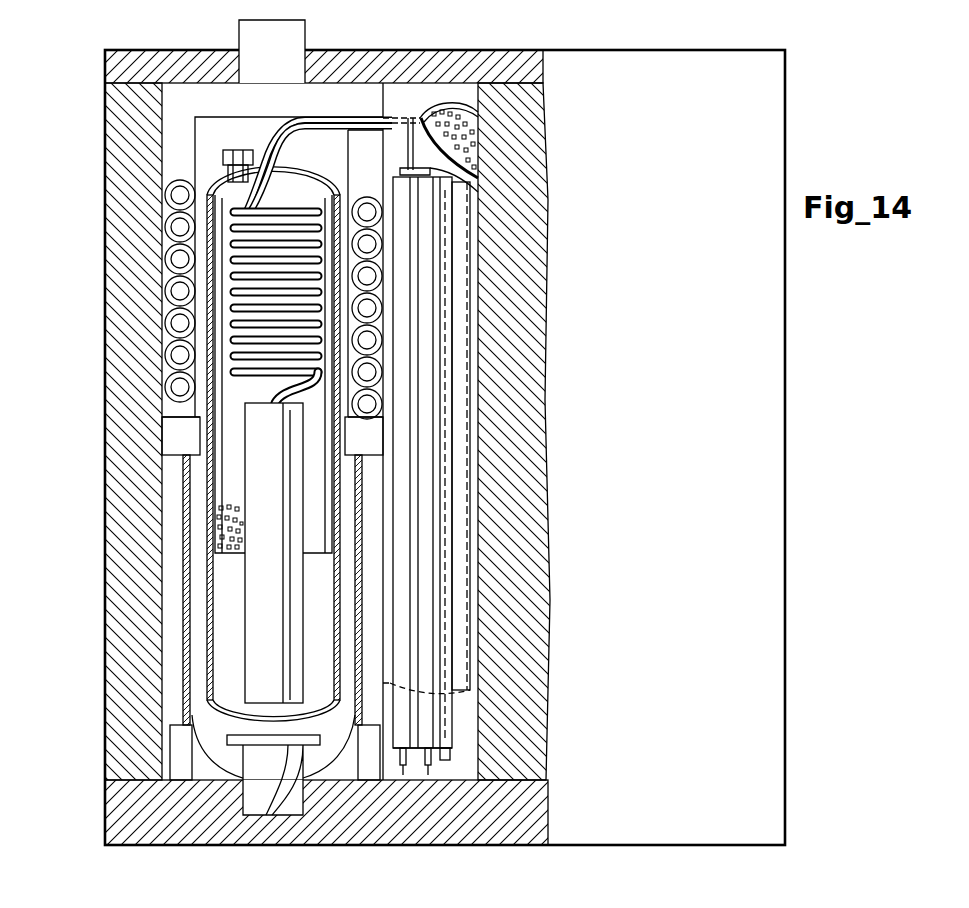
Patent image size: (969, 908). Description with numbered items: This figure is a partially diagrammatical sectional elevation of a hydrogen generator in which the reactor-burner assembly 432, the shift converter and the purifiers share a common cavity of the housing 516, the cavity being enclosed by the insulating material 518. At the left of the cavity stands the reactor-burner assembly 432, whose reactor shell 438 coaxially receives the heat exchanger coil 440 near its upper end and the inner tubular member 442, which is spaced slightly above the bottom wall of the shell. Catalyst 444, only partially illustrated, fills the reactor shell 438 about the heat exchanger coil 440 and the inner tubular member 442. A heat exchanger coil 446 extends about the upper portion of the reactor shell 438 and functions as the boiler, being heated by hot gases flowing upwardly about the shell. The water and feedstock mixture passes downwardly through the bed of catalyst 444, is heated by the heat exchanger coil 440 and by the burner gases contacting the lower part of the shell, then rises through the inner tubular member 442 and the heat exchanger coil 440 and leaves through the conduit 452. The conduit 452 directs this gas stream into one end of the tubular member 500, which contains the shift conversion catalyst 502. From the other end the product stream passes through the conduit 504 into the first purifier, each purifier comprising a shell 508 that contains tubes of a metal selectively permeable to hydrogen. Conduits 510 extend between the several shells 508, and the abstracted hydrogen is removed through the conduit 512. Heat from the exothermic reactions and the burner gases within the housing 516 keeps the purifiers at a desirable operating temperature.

The reactor-burner assembly 432 is at (180, 468).
The reactor shell 438 is at (210, 497).
The heat exchanger coil 440 is at (228, 188).
The inner tubular member 442 is at (258, 622).
The catalyst 444 is at (220, 540).
The heat exchanger coil 446 is at (180, 323).
The conduit 452 is at (345, 118).
The tubular member 500 is at (447, 105).
The shift conversion catalyst 502 is at (470, 150).
The conduit 504 is at (450, 758).
The shell 508 is at (440, 255).
The conduits 510 is at (477, 186).
The conduit 512 is at (410, 770).
The housing 516 is at (538, 41).
The insulating material 518 is at (200, 50).